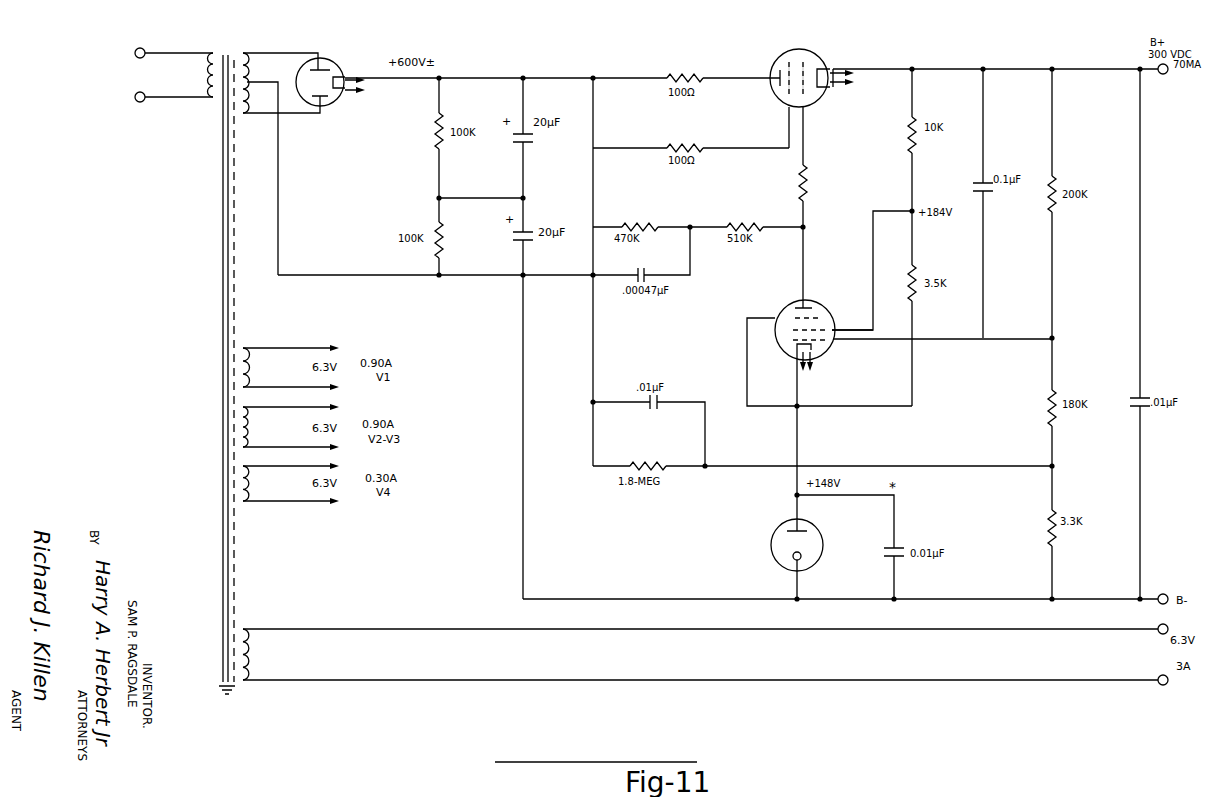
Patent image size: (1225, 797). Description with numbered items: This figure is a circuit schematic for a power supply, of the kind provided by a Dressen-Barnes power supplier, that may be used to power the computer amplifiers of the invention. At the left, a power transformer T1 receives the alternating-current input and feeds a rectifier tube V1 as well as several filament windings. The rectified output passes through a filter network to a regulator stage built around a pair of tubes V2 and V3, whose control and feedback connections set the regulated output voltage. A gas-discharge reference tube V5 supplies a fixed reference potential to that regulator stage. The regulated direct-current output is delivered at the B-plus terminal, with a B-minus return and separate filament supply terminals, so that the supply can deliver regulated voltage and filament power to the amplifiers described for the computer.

The power transformer 511112 T1 is at (137, 357).
The rectifier tube 6203 V1 is at (305, 152).
The 6AQ5 tube V2 is at (806, 119).
The 6AQ5 tube V3 is at (899, 361).
The 0A2 voltage regulator tube V5 is at (774, 547).